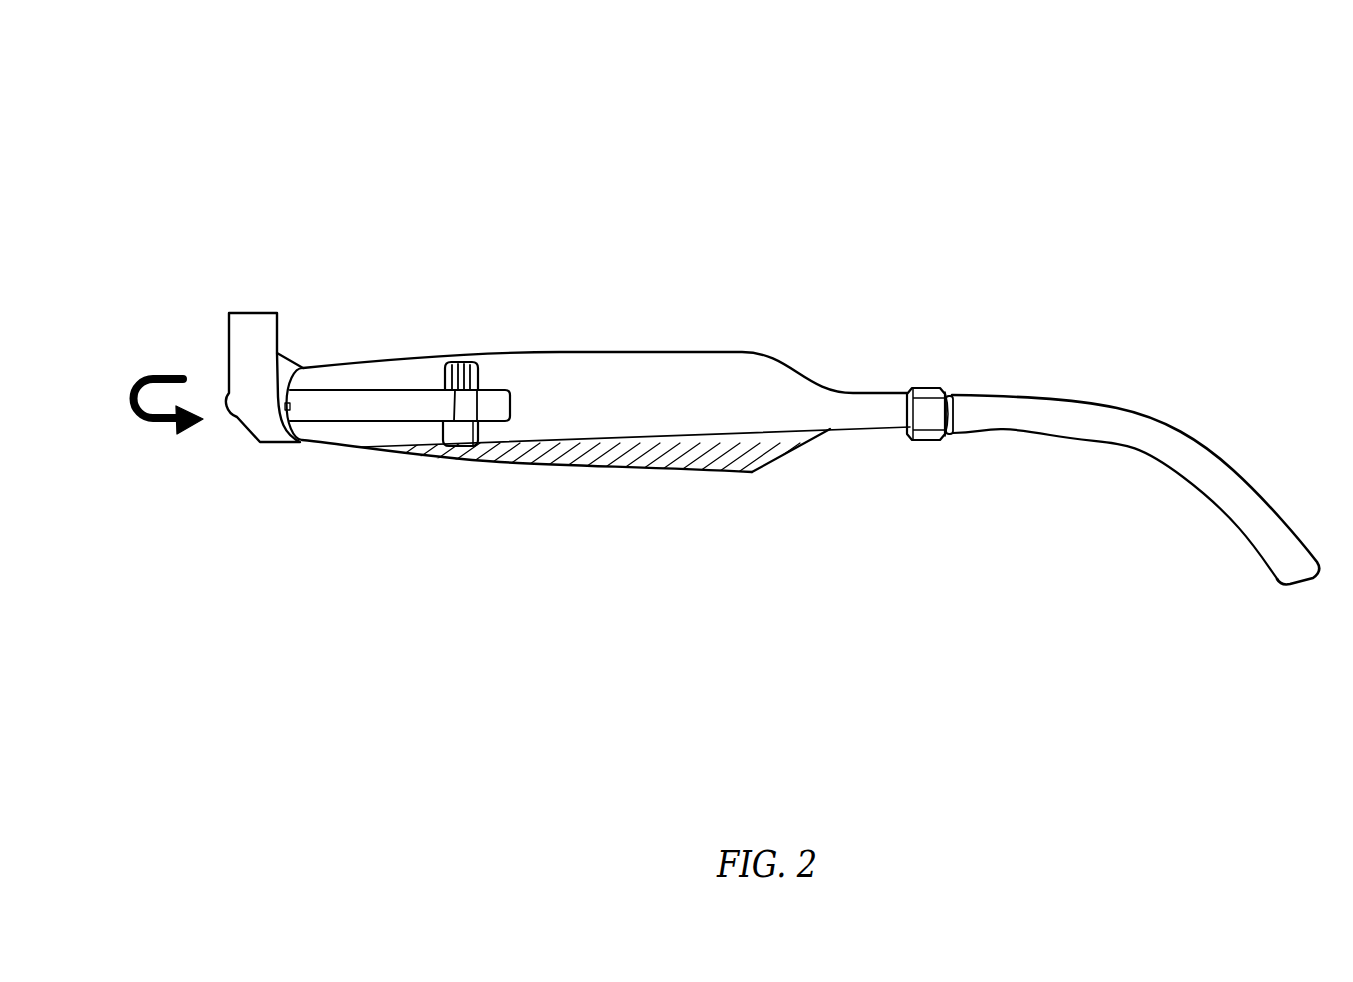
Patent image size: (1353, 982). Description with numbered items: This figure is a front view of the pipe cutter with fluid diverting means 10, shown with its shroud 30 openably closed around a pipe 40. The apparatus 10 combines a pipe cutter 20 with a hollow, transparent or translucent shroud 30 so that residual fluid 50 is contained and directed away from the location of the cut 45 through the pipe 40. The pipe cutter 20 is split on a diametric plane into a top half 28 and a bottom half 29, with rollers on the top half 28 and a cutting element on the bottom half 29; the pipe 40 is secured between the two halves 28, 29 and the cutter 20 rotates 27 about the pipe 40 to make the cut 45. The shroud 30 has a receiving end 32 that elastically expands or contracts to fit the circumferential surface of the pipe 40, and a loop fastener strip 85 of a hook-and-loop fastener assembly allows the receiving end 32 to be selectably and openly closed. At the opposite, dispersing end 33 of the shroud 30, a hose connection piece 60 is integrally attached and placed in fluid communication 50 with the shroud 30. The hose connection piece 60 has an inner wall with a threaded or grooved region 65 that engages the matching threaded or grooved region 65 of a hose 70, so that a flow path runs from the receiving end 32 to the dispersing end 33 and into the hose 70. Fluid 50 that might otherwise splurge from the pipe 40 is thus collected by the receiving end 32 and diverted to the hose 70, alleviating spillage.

The pipe cutter with fluid diverting means 10 is at (1218, 180).
The pipe cutter 20 is at (455, 362).
The rotation 27 is at (150, 372).
The top half 28 is at (481, 373).
The bottom half 29 is at (455, 433).
The shroud 30 is at (695, 388).
The receiving end 32 is at (329, 370).
The dispersing end 33 is at (832, 418).
The pipe 40 is at (495, 410).
The cut 45 is at (471, 362).
The fluid 50 is at (720, 433).
The hose connection piece 60 is at (937, 413).
The threaded or grooved region 65 is at (953, 412).
The hose 70 is at (1178, 447).
The loop fastener strip 85 is at (243, 415).